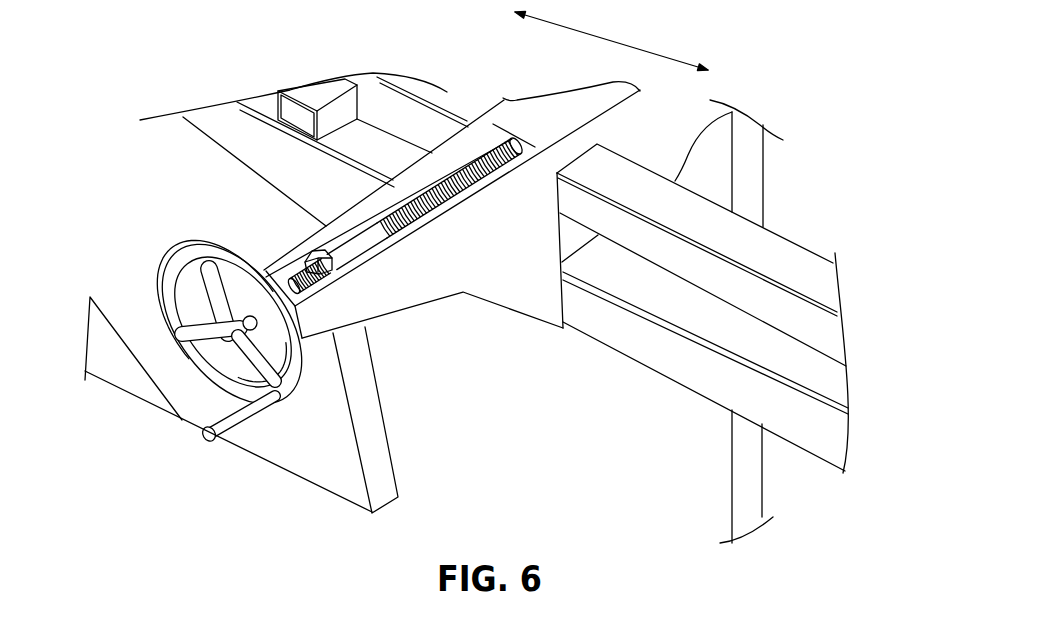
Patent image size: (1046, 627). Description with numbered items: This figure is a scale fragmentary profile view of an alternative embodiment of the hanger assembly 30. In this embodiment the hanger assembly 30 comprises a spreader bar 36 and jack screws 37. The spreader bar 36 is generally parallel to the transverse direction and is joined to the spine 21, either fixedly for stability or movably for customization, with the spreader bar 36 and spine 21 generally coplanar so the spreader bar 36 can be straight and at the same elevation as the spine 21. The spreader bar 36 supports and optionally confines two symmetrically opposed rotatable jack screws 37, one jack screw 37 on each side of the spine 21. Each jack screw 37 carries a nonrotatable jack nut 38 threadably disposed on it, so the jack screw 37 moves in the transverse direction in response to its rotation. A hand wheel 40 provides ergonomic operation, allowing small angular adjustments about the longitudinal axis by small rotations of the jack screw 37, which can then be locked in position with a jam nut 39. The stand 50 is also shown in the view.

The spine 21 is at (705, 373).
The hanger assembly 30 is at (553, 393).
The spreader bar 36 is at (517, 270).
The jack screw 37 is at (455, 175).
The jack nut 38 is at (342, 242).
The jam nut 39 is at (306, 254).
The hand wheel 40 is at (219, 383).
The stand 50 is at (310, 458).